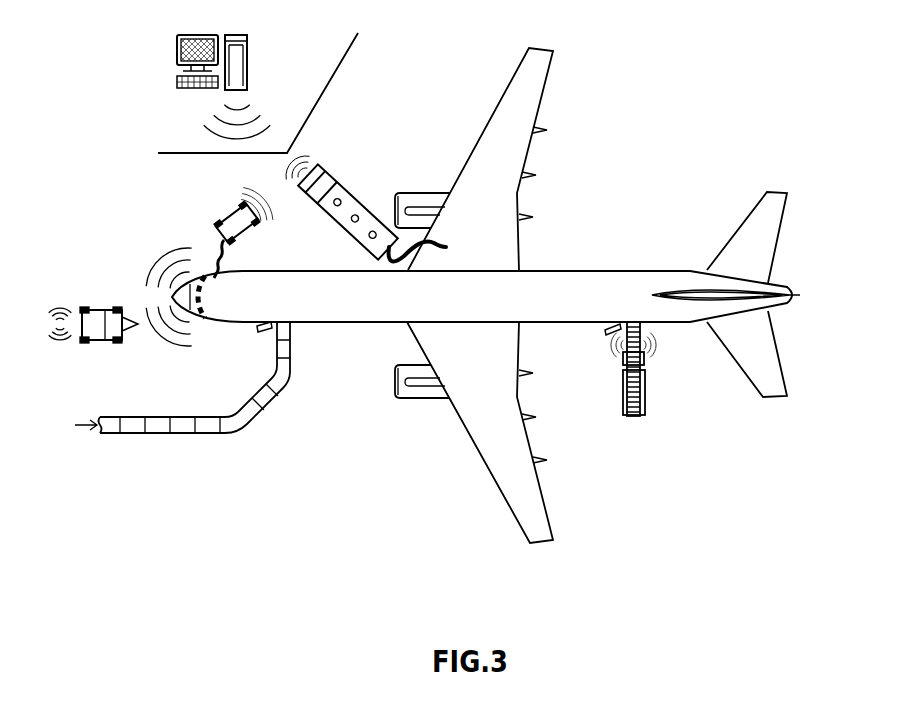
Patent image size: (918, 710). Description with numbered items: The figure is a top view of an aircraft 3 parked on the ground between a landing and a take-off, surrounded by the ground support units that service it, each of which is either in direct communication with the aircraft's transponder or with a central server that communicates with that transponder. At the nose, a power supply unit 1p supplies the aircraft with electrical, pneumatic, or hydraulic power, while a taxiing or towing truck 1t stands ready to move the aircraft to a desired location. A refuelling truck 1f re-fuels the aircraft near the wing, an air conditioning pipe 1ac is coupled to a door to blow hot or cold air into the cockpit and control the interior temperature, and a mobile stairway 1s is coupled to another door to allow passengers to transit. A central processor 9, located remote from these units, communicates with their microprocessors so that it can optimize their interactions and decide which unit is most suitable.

The central processor 9 is at (250, 55).
The refuelling truck 1f is at (353, 190).
The power supply unit 1p is at (227, 212).
The aircraft 3 is at (587, 269).
The taxiing or towing truck 1t is at (92, 347).
The air conditioning pipe 1ac is at (268, 407).
The mobile stairway 1s is at (622, 407).